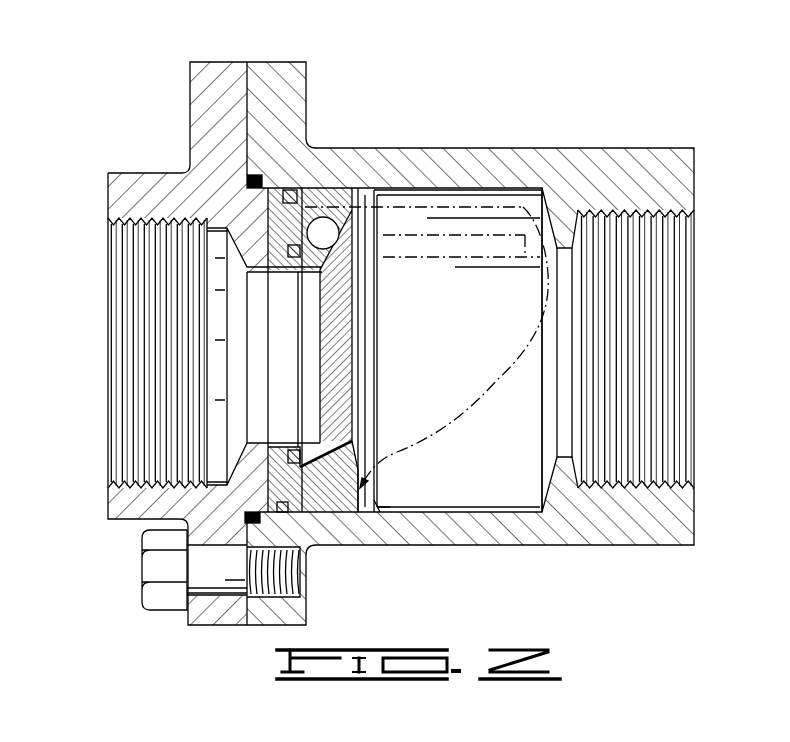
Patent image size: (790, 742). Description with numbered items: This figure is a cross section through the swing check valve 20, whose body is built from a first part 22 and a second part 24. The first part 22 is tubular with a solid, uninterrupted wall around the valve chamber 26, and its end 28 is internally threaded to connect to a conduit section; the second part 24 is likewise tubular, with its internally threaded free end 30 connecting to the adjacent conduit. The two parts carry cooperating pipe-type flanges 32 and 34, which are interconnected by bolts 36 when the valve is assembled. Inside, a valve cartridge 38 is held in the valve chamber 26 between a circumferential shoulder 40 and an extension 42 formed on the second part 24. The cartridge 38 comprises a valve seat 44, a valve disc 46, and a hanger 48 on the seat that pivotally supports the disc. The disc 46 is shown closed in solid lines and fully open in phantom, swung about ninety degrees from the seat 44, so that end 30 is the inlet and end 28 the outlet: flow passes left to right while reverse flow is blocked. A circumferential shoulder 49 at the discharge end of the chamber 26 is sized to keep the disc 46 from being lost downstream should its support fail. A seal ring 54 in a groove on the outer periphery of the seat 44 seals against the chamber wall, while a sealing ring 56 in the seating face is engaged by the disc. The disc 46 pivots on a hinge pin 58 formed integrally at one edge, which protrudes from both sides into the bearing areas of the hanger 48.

The swing check valve 20 is at (196, 55).
The first part 22 is at (487, 158).
The second part 24 is at (157, 182).
The valve chamber 26 is at (445, 423).
The one end 28 is at (697, 178).
The free end 30 is at (105, 229).
The flange 32 is at (310, 72).
The flange 34 is at (200, 100).
The bolts 36 is at (162, 572).
The valve cartridge 38 is at (378, 476).
The circumferential shoulder 40 is at (388, 500).
The extension 42 is at (265, 488).
The valve seat 44 is at (268, 440).
The valve disc 46 is at (343, 380).
The hanger 48 is at (392, 278).
The circumferential shoulder 49 is at (553, 461).
The seal ring 54 is at (290, 192).
The sealing ring 56 is at (289, 255).
The hinge pin 58 is at (327, 228).